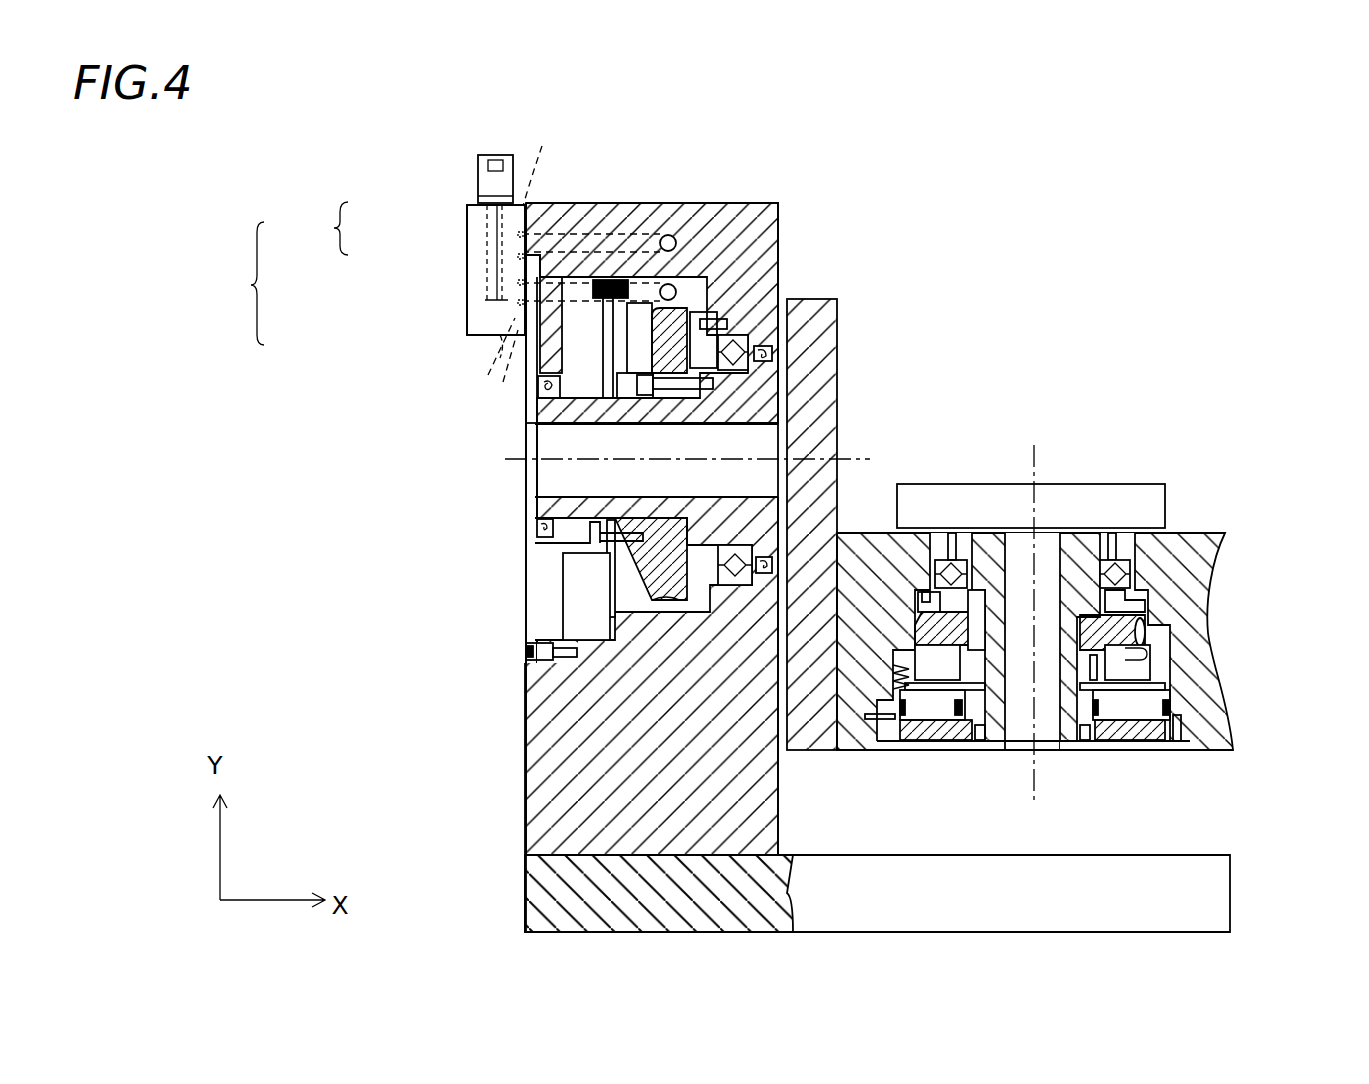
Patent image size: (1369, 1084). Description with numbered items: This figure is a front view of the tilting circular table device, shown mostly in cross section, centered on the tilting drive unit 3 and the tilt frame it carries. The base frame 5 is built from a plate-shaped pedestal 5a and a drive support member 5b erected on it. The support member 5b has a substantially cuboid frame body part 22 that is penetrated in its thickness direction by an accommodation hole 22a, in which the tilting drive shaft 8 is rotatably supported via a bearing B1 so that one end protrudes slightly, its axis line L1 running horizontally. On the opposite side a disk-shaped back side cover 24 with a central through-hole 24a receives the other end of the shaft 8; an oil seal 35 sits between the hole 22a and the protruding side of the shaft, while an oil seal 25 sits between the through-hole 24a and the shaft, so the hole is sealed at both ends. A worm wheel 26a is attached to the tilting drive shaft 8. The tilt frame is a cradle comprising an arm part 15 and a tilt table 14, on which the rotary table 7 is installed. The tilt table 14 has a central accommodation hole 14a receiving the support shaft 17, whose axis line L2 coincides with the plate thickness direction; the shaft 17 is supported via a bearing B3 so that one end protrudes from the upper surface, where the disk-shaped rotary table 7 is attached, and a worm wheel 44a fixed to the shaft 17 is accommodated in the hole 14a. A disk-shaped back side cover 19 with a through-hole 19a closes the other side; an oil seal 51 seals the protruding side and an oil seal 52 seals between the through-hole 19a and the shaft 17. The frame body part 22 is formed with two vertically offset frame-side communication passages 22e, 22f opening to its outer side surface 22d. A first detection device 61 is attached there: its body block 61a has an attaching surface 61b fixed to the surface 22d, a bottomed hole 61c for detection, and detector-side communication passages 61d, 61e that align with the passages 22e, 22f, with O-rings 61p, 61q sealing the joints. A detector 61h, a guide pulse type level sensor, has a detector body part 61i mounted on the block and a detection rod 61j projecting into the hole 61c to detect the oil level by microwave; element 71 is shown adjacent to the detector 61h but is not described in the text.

The tilting drive unit 3 is at (628, 110).
The base frame 5 is at (503, 785).
The pedestal 5a is at (523, 887).
The support member 5b is at (523, 828).
The rotary table 7 is at (1099, 484).
The tilting drive shaft 8 is at (578, 515).
The tilt table 14 is at (1206, 532).
The accommodation hole for a support shaft 14a is at (1135, 651).
The arm part 15 is at (822, 298).
The support shaft 17 is at (1060, 583).
The back side cover 19 is at (1152, 742).
The through-hole 19a is at (1060, 710).
The frame body part 22 is at (778, 233).
The accommodation hole for a tilt shaft 22a is at (778, 393).
The outer side surface 22d is at (523, 762).
The first frame-side communication passage 22e is at (677, 241).
The second frame-side communication passage 22f is at (675, 288).
The back side cover 24 is at (563, 580).
The through-hole 24a is at (535, 497).
The oil seal 25 is at (537, 528).
The worm wheel 26a is at (563, 625).
The oil seal 35 is at (780, 357).
The worm wheel 44a is at (1145, 596).
The oil seal 51 is at (1113, 540).
The oil seal 52 is at (1092, 740).
The first detection device 61 is at (369, 275).
The body block 61a is at (467, 328).
The attaching surface 61b is at (542, 252).
The hole for detection 61c is at (480, 303).
The first detector-side communication passage 61d is at (480, 283).
The second detector-side communication passage 61e is at (505, 330).
The detector 61h is at (390, 251).
The detector body part 61i is at (477, 202).
The detection rod 61j is at (478, 238).
The O-ring 61p is at (540, 162).
The O-ring 61q is at (487, 364).
The connector 71 is at (470, 144).
The bearing B1 is at (750, 337).
The bearing B3 is at (1127, 560).
The axis line L1 is at (510, 458).
The axis line L2 is at (1032, 466).